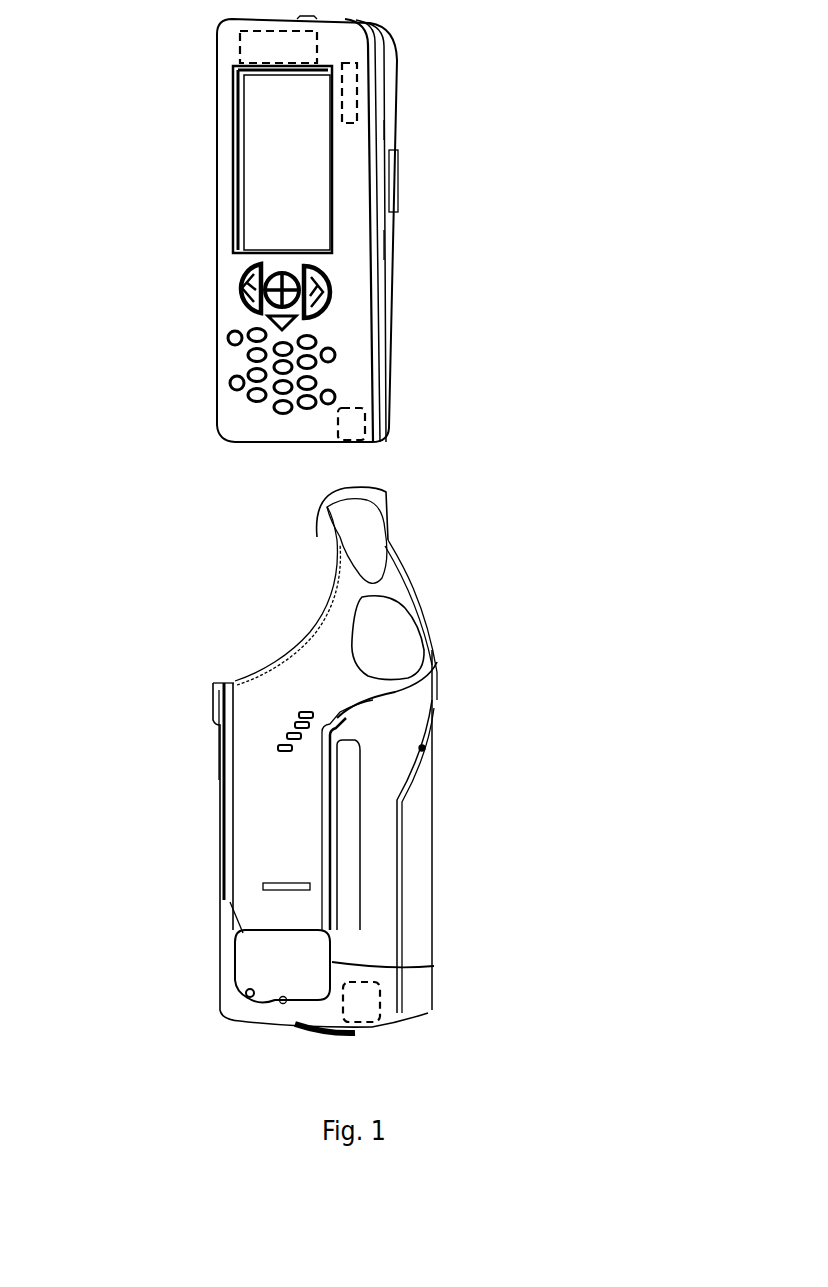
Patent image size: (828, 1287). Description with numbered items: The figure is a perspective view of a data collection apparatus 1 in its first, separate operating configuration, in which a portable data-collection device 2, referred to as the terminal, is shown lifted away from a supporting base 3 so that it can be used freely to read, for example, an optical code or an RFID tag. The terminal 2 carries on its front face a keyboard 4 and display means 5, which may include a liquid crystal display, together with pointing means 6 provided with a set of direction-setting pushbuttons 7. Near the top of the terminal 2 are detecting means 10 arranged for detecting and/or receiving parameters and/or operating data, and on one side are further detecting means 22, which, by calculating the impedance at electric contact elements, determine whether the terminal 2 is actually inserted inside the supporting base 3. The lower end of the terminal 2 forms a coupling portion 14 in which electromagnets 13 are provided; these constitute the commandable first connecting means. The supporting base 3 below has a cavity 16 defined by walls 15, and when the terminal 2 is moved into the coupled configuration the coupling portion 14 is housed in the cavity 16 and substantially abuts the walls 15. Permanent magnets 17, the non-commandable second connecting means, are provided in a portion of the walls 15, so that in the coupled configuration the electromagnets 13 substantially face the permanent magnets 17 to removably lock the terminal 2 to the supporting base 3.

The data collection apparatus 1 is at (595, 513).
The portable data-collection device 2 is at (537, 99).
The supporting base 3 is at (577, 809).
The keyboard 4 is at (342, 370).
The display means 5 is at (300, 192).
The pointing means 6 is at (230, 302).
The direction-setting pushbuttons 7 is at (320, 270).
The detecting means 10 is at (303, 53).
The electromagnets 13 is at (366, 418).
The coupling portion 14 is at (200, 422).
The walls 15 is at (369, 937).
The cavity 16 is at (275, 907).
The permanent magnets 17 is at (380, 1003).
The further detecting means 22 is at (355, 95).